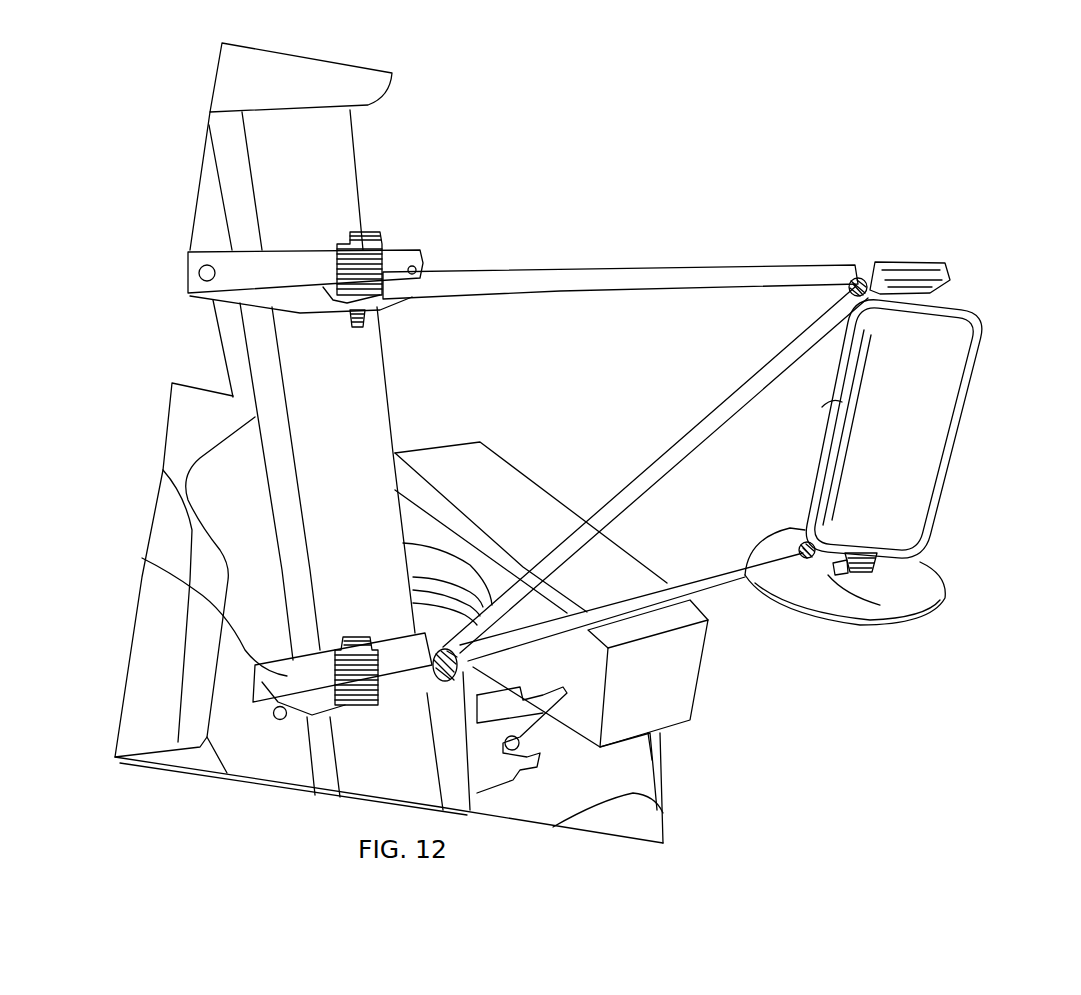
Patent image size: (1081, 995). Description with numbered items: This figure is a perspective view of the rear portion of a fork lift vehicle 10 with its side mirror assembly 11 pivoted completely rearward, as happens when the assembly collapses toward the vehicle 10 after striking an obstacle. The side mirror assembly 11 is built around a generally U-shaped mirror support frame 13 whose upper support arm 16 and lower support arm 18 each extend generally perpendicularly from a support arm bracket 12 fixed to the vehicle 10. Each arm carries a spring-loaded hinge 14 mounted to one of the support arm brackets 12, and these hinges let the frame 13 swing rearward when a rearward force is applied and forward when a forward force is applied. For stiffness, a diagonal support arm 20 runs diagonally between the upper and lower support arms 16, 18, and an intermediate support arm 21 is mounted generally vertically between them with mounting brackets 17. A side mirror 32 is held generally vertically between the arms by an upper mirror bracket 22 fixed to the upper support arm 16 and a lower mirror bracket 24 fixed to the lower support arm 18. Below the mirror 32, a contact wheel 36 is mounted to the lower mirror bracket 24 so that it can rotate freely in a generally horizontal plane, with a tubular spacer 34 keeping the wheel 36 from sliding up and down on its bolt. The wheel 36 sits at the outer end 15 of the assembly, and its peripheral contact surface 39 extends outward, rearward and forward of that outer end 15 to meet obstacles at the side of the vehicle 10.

The fork lift vehicle 10 is at (123, 377).
The side mirror assembly 11 is at (898, 222).
The support arm bracket 12 is at (243, 270).
The mirror support frame 13 is at (702, 238).
The spring-loaded hinge 14 is at (385, 268).
The outer end 15 is at (880, 190).
The upper support arm 16 is at (567, 275).
The mounting bracket 17 is at (858, 262).
The lower support arm 18 is at (710, 580).
The diagonal support arm 20 is at (723, 395).
The intermediate support arm 21 is at (822, 407).
The upper mirror bracket 22 is at (930, 262).
The lower mirror bracket 24 is at (918, 565).
The side mirror 32 is at (940, 410).
The tubular spacer 34 is at (853, 600).
The contact wheel 36 is at (900, 612).
The contact surface 39 is at (900, 605).